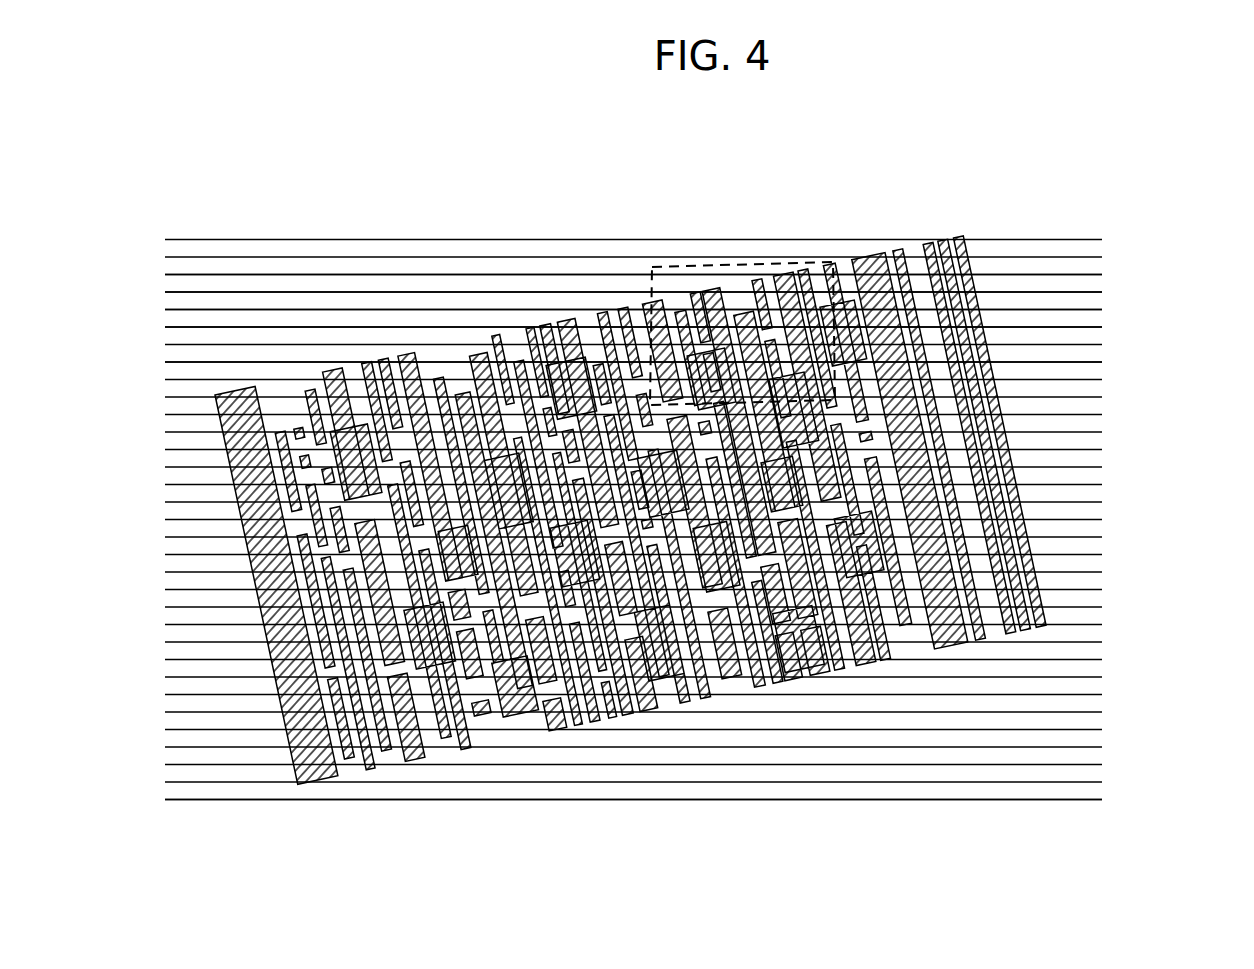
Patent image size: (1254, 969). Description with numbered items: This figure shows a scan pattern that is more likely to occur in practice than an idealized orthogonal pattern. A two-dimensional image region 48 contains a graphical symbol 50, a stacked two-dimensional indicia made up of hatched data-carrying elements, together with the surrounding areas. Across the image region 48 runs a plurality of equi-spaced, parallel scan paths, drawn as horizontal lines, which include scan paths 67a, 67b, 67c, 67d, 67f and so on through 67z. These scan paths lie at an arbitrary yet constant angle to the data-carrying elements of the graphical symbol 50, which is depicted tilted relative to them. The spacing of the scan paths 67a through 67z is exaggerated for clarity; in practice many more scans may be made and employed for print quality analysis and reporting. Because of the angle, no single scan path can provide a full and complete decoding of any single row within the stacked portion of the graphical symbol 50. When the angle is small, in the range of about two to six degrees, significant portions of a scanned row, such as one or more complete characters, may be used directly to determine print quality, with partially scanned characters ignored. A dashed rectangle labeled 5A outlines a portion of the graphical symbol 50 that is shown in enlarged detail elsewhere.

The image region 48 is at (1192, 662).
The graphical symbol 50 is at (757, 717).
The detail region shown in FIG. 5A is at (697, 266).
The scan path 67a is at (1016, 274).
The scan path 67b is at (1092, 292).
The scan path 67c is at (1097, 310).
The scan path 67d is at (1097, 325).
The scan path 67f is at (1097, 362).
The scan path 67z is at (1008, 800).